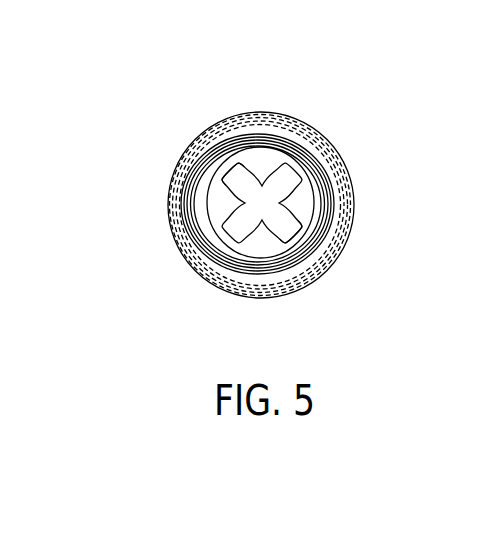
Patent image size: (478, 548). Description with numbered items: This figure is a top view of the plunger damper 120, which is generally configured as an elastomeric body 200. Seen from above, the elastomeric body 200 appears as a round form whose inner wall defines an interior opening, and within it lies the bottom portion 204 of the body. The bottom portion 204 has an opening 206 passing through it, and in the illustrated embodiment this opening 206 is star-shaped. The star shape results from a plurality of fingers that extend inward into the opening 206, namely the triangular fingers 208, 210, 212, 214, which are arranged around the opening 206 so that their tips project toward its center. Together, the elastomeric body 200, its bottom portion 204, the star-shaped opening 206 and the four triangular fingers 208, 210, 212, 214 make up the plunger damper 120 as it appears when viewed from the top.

The plunger damper 120 is at (218, 112).
The elastomeric body 200 is at (345, 160).
The bottom portion 204 is at (262, 186).
The opening 206 is at (284, 178).
The triangular finger 208 is at (219, 141).
The triangular finger 210 is at (279, 203).
The triangular finger 212 is at (264, 222).
The triangular finger 214 is at (245, 203).